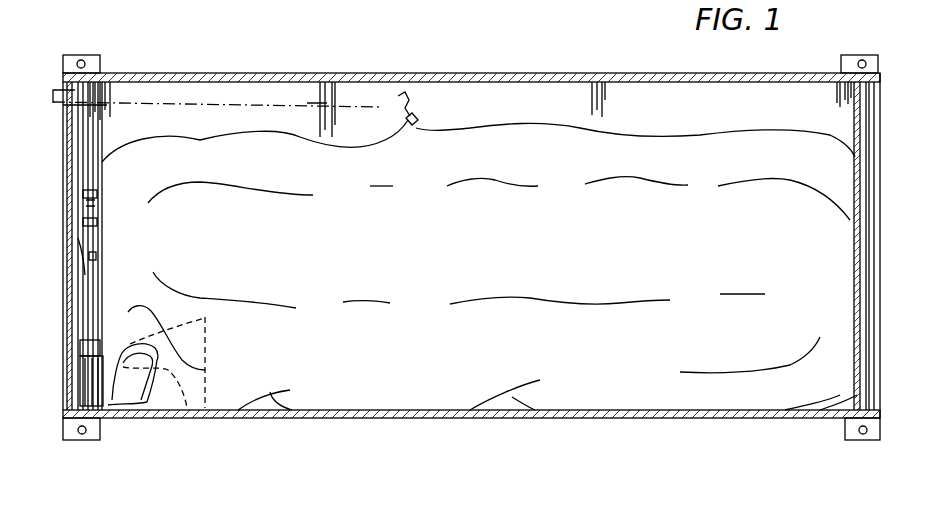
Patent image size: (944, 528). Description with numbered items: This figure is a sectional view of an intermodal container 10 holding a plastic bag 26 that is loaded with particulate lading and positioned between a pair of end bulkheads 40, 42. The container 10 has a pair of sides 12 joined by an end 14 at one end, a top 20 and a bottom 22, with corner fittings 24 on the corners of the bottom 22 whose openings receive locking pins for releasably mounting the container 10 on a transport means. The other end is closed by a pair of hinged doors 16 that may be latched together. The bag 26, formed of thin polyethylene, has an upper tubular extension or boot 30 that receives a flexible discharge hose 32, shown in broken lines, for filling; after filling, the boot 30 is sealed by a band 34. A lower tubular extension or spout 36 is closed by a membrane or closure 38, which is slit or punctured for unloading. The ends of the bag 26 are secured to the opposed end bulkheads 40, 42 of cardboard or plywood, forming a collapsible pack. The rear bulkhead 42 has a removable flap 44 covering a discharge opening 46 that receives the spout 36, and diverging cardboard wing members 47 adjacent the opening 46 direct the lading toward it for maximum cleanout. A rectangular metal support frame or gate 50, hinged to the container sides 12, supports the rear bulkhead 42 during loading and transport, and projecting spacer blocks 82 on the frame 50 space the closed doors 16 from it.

The container 10 is at (568, 73).
The sides 12 is at (448, 93).
The end 14 is at (857, 105).
The doors 16 is at (70, 273).
The top 20 is at (260, 73).
The bottom 22 is at (273, 420).
The corner fittings 24 is at (87, 442).
The plastic bag 26 is at (432, 388).
The upper tubular extension or boot 30 is at (402, 95).
The flexible discharge hose 32 is at (155, 85).
The band 34 is at (415, 124).
The lower tubular extension or spout 36 is at (138, 395).
The membrane or closure 38 is at (182, 395).
The end bulkhead 40 is at (855, 247).
The rear bulkhead 42 is at (100, 208).
The removable flap 44 is at (100, 358).
The discharge opening 46 is at (100, 382).
The cardboard wing members 47 is at (207, 337).
The support frame or gate 50 is at (100, 258).
The spacer blocks or members 82 is at (83, 263).